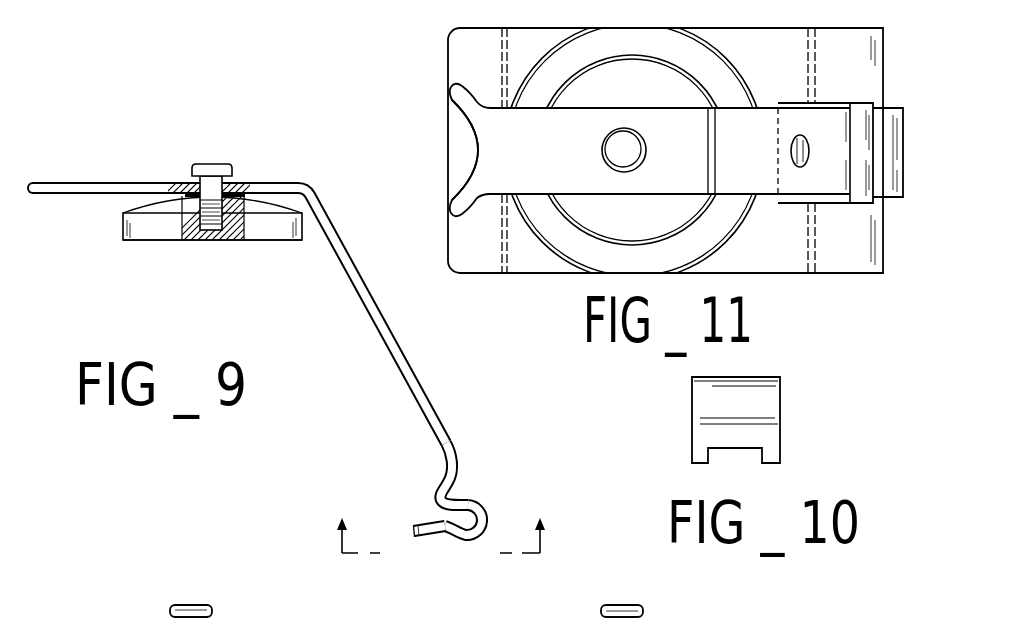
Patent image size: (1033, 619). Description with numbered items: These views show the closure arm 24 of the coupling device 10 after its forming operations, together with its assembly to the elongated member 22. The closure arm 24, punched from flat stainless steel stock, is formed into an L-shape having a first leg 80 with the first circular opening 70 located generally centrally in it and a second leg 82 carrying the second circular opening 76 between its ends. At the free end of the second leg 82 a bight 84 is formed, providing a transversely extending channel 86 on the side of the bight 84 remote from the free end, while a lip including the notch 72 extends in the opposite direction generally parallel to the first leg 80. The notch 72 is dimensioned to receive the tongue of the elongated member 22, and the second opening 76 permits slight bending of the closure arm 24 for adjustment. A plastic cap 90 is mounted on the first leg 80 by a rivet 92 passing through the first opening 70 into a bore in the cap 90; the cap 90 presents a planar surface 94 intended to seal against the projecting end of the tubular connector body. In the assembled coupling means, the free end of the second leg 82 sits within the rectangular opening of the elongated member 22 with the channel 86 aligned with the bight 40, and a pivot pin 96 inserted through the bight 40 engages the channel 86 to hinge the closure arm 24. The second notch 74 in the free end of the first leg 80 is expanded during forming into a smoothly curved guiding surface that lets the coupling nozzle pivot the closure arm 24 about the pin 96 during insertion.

In FIG. 9, the coupling device 10 is at (441, 512).
In FIG. 11, the elongated member 22 is at (665, 170).
In FIG. 9, the closure arm 24 is at (273, 362).
In FIG. 11, the closure arm 24 is at (737, 120).
In FIG. 11, the bight 40 is at (865, 78).
In FIG. 9, the first circular opening 70 is at (232, 189).
In FIG. 9, the notch 72 is at (415, 538).
In FIG. 10, the notch 72 is at (727, 456).
In FIG. 11, the second notch 74 is at (467, 130).
In FIG. 11, the second circular opening 76 is at (797, 156).
In FIG. 9, the first leg 80 is at (132, 182).
In FIG. 9, the second leg 82 is at (375, 297).
In FIG. 9, the bight 84 is at (473, 521).
In FIG. 10, the bight 84 is at (758, 402).
In FIG. 9, the channel 86 is at (453, 490).
In FIG. 9, the plastic cap 90 is at (162, 232).
In FIG. 9, the rivet 92 is at (215, 163).
In FIG. 9, the planar surface 94 is at (272, 242).
In FIG. 11, the pivot pin 96 is at (865, 142).